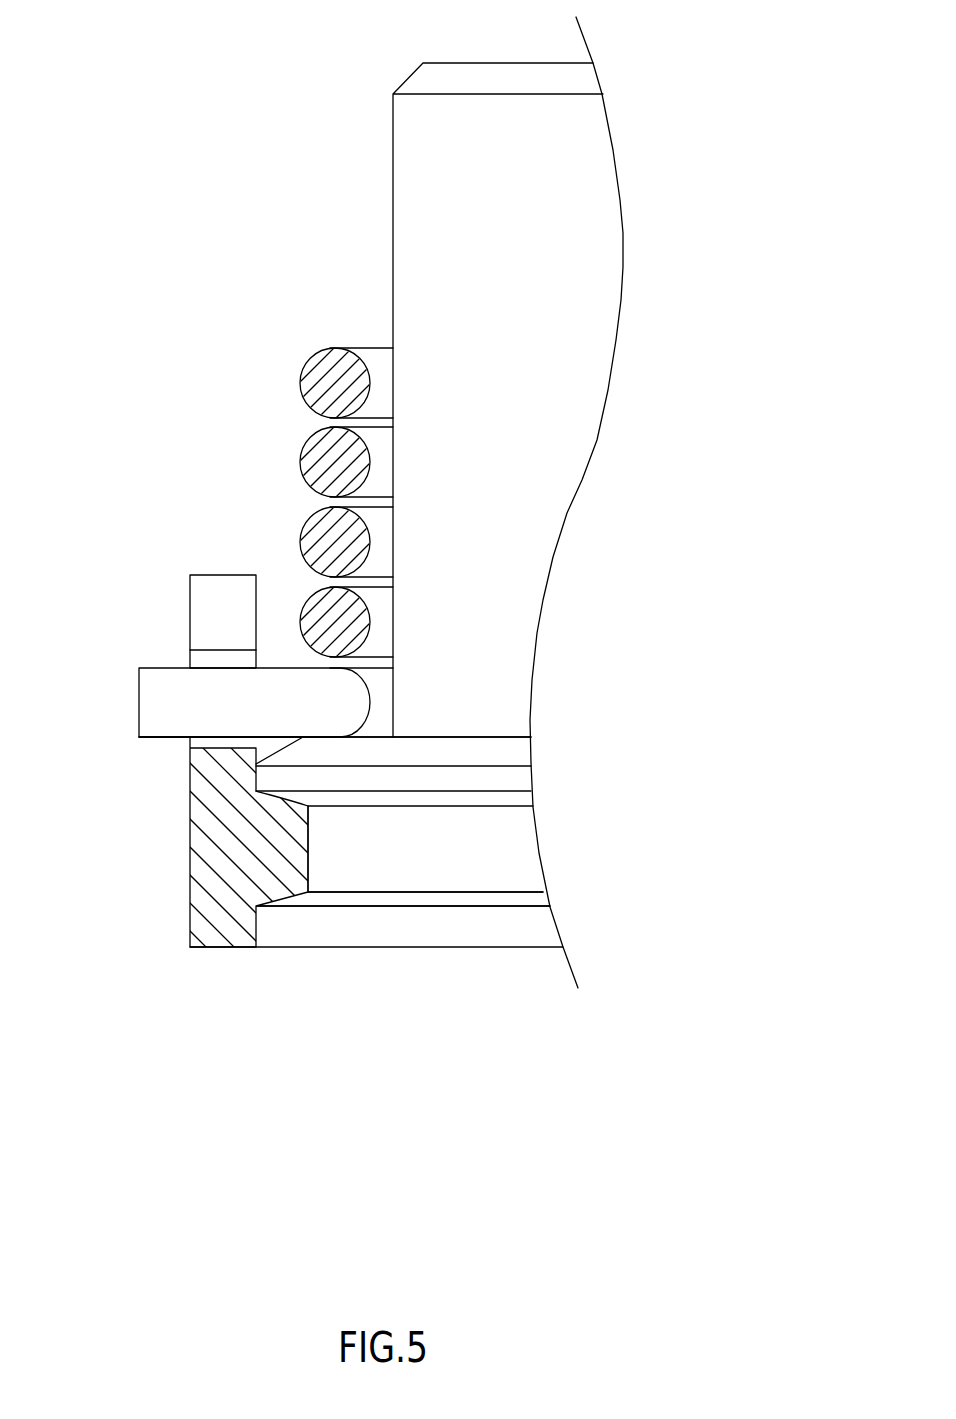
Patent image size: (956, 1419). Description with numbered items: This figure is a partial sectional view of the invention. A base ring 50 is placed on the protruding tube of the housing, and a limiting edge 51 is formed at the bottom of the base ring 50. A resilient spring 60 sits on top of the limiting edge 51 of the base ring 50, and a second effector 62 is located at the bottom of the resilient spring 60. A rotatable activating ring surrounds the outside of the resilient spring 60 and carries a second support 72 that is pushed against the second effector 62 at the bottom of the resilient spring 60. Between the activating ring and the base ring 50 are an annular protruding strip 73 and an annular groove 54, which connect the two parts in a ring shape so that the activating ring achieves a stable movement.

The base ring 50 is at (383, 168).
The limiting edge 51 is at (327, 736).
The annular groove 54 is at (358, 862).
The resilient spring 60 is at (300, 385).
The second effector 62 is at (139, 702).
The second support 72 is at (190, 628).
The annular protruding strip 73 is at (303, 852).